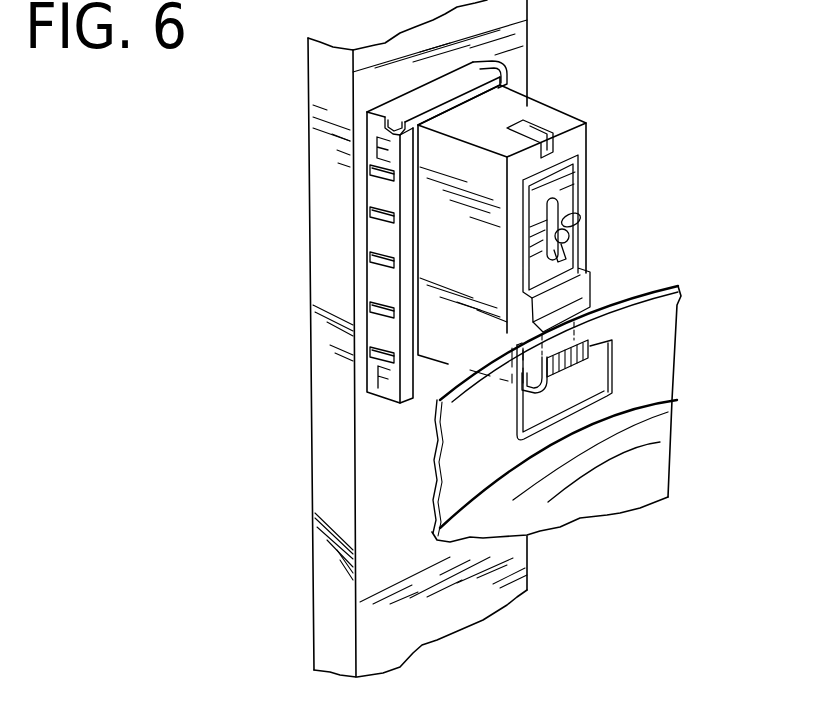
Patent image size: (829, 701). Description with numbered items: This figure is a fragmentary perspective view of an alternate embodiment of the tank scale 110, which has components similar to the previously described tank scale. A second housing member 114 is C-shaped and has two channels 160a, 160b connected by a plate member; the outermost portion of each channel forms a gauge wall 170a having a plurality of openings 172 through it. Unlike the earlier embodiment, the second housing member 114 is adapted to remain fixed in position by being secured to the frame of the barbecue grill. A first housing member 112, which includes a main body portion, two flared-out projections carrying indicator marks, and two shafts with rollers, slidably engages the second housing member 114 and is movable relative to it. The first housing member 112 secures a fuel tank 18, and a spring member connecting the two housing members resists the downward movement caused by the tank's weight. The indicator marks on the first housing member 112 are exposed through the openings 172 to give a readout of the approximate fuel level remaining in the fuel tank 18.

The tank scale 110 is at (661, 100).
The first housing member 112 is at (550, 120).
The second housing member 114 is at (473, 64).
The channel 160a is at (380, 193).
The channel 160b is at (508, 80).
The gauge wall 170a is at (378, 330).
The openings 172 is at (380, 207).
The fuel tank 18 is at (653, 467).